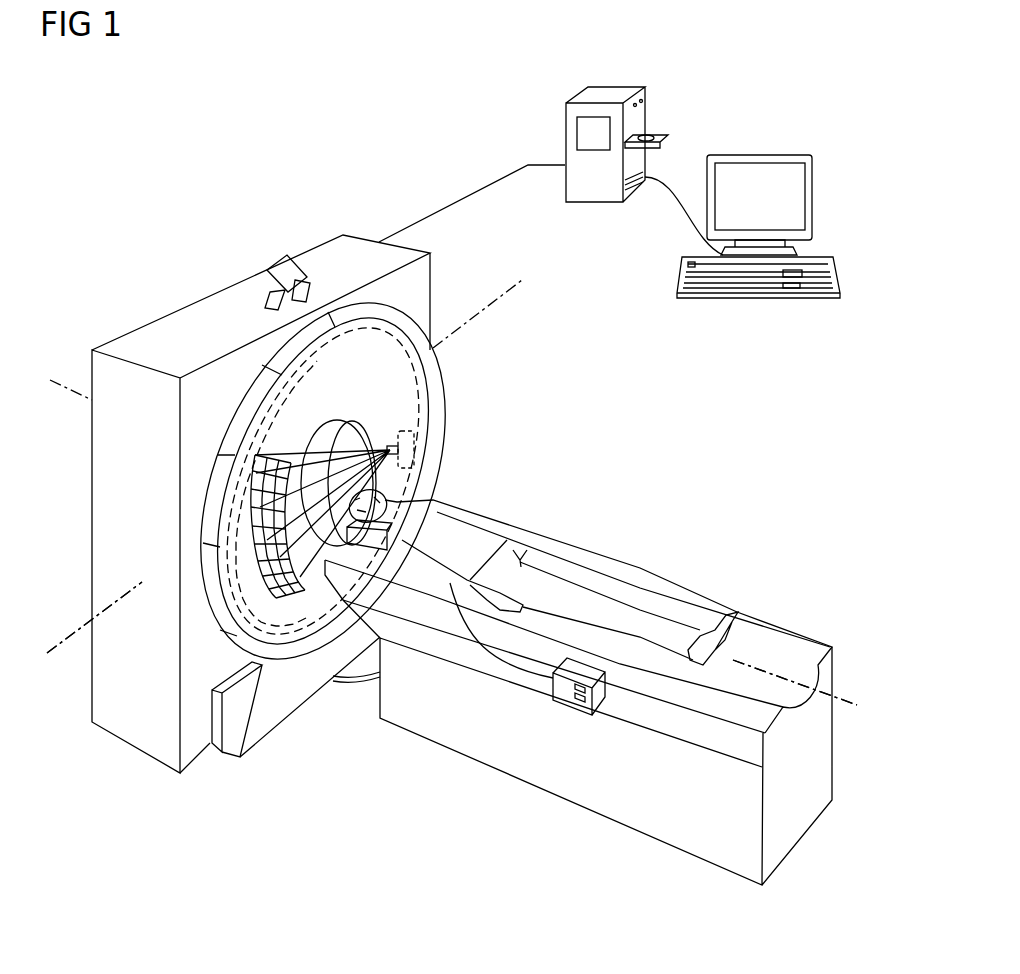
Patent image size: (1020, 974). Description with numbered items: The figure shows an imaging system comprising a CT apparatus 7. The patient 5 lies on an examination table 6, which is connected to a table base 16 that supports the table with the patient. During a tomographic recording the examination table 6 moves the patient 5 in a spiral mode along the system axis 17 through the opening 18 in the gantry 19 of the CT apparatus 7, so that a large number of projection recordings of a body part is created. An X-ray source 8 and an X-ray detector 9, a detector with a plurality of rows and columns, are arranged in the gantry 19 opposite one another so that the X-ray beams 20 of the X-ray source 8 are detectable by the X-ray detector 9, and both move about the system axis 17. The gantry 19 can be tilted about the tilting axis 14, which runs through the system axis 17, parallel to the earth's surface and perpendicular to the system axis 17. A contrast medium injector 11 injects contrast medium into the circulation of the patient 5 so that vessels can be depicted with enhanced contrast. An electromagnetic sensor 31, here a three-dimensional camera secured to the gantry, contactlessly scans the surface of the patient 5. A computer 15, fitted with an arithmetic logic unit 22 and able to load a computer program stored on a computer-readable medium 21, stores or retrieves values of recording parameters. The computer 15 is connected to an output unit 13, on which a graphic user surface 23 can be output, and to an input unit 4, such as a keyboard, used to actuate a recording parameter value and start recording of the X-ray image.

The input unit 4 is at (752, 299).
The patient 5 is at (468, 530).
The examination table 6 is at (798, 640).
The CT apparatus 7 is at (144, 260).
The X-ray source 8 is at (413, 450).
The X-ray detector 9 is at (267, 608).
The contrast medium injector 11 is at (562, 693).
The output unit 13 is at (760, 158).
The tilting axis 14 is at (53, 642).
The computer 15 is at (607, 96).
The table base 16 is at (498, 760).
The system axis 17 is at (848, 707).
The opening 18 is at (327, 447).
The gantry 19 is at (135, 727).
The X-ray beams 20 is at (360, 447).
The computer-readable medium 21 is at (651, 134).
The arithmetic logic unit 22 is at (583, 130).
The graphic user surface 23 is at (793, 196).
The electromagnetic sensor 31 is at (276, 270).